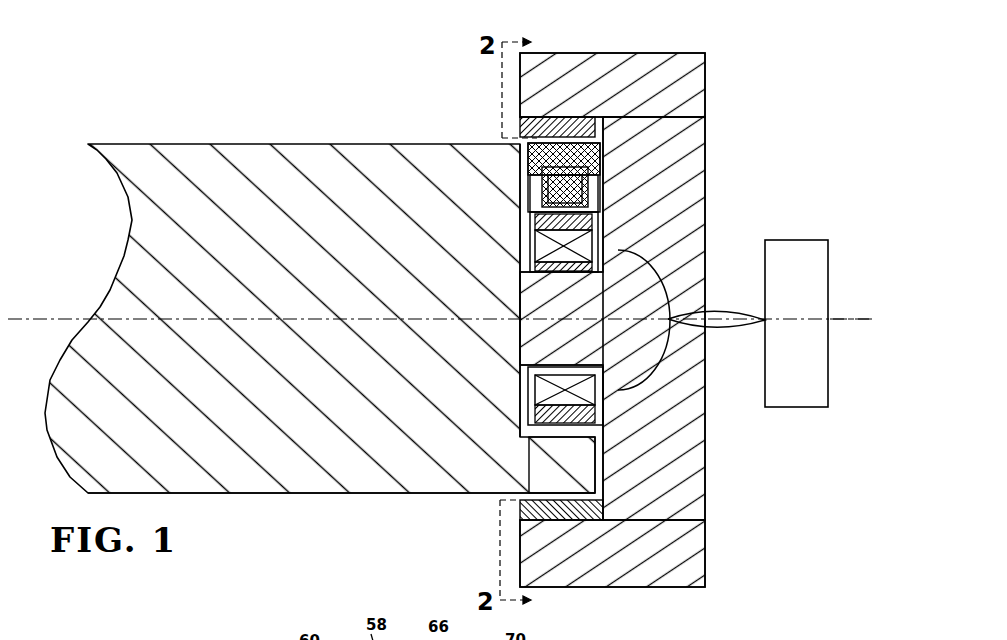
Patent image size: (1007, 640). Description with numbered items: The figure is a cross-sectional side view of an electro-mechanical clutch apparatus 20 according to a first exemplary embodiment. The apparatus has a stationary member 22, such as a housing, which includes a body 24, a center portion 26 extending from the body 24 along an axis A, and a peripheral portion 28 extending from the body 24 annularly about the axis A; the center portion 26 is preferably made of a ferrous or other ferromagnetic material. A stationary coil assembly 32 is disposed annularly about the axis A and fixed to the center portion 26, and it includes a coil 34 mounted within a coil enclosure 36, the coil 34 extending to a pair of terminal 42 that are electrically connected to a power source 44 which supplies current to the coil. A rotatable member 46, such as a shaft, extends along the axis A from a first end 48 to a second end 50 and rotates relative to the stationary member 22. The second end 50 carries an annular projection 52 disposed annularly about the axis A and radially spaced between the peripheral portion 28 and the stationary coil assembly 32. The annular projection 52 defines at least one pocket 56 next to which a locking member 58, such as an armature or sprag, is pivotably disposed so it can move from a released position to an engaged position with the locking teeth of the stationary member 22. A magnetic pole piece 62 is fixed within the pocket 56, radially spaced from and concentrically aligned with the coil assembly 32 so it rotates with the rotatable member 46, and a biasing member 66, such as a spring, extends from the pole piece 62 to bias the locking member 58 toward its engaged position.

The electro-mechanical clutch apparatus 20 is at (772, 170).
The stationary member 22 is at (705, 512).
The body 24 is at (705, 430).
The center portion 26 is at (522, 270).
The peripheral portion 28 is at (563, 53).
The stationary coil assembly 32 is at (530, 393).
The coil 34 is at (592, 240).
The coil enclosure 36 is at (600, 202).
The terminal 42 is at (749, 306).
The power source 44 is at (828, 273).
The rotatable member 46 is at (218, 493).
The first end 48 is at (130, 222).
The second end 50 is at (598, 166).
The annular projection 52 is at (522, 176).
The pocket 56 is at (520, 205).
The locking member 58 is at (548, 150).
The magnetic pole piece 62 is at (536, 212).
The biasing member 66 is at (548, 130).
The axis A is at (850, 322).